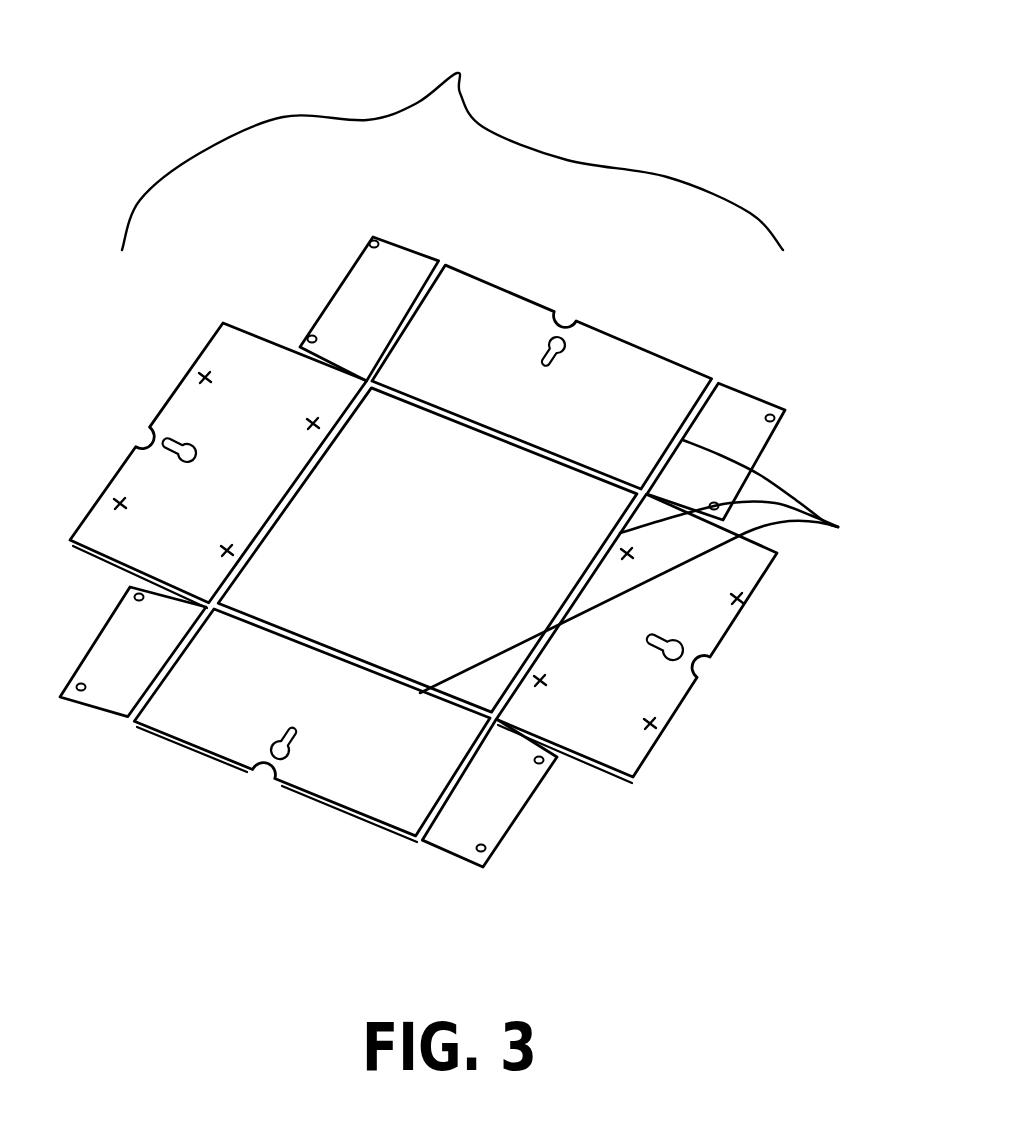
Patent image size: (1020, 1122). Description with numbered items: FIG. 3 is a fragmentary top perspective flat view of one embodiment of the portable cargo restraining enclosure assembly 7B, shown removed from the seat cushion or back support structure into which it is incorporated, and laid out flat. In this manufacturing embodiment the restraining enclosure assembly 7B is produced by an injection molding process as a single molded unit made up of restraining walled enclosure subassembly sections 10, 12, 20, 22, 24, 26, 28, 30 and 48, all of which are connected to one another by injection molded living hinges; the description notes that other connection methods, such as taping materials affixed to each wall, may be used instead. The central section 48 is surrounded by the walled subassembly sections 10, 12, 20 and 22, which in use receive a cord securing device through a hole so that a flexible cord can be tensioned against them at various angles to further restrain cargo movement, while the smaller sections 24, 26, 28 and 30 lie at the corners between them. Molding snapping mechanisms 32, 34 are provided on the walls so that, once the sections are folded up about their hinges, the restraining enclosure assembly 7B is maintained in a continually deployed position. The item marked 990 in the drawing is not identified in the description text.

The restraining enclosure assembly 7B is at (452, 135).
The restraining walled enclosure subassembly section 10 is at (598, 733).
The restraining walled enclosure subassembly section 12 is at (257, 367).
The restraining walled enclosure subassembly section 20 is at (490, 317).
The restraining walled enclosure subassembly section 22 is at (355, 783).
The restraining walled enclosure subassembly section 24 is at (457, 827).
The restraining walled enclosure subassembly section 26 is at (110, 690).
The restraining walled enclosure subassembly section 28 is at (402, 273).
The restraining walled enclosure subassembly section 30 is at (723, 422).
The molding snapping mechanism 32 is at (377, 238).
The molding snapping mechanism 34 is at (207, 377).
The restraining walled enclosure subassembly section 48 is at (497, 557).
The tether cords 990 is at (661, 566).